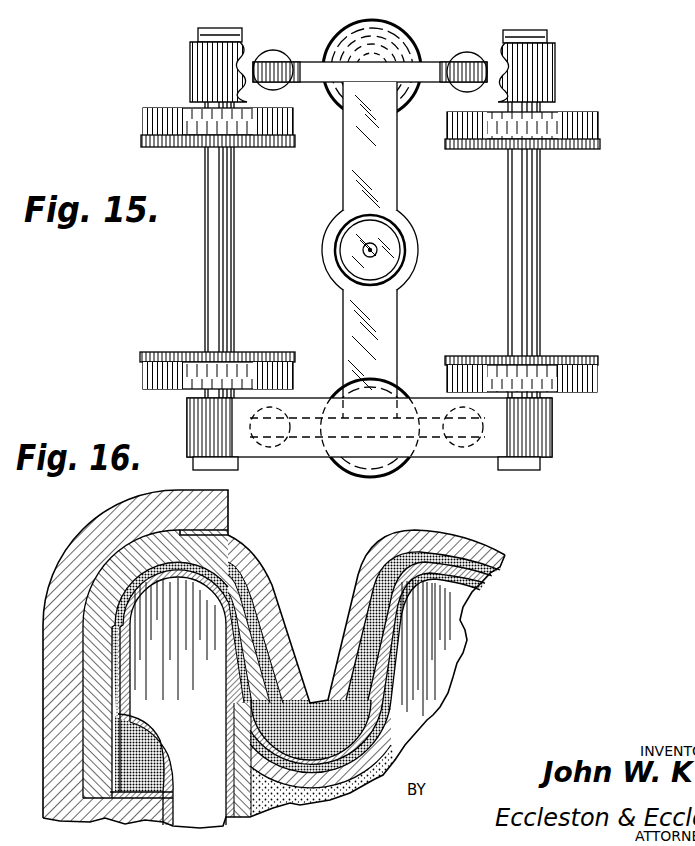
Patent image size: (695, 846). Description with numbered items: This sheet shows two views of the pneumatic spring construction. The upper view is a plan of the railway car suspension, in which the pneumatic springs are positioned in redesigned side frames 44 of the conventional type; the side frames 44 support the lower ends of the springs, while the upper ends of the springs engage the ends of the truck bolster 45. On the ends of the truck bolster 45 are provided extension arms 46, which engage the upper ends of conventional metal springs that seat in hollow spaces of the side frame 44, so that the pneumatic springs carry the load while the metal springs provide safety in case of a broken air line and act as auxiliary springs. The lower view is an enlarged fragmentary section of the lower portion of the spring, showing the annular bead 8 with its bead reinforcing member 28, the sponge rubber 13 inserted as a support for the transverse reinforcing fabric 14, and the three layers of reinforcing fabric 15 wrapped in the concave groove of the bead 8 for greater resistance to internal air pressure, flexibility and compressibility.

In FIG. 15, the extension arms 46 is at (277, 52).
In FIG. 15, the truck bolster 45 is at (394, 175).
In FIG. 15, the side frame 44 is at (437, 448).
In FIG. 16, the bead reinforcing member 28 is at (362, 586).
In FIG. 16, the layers of reinforcing fabric 15 is at (308, 692).
In FIG. 16, the bead 8 is at (236, 712).
In FIG. 16, the transverse reinforcing fabric 14 is at (226, 737).
In FIG. 16, the sponge rubber 13 is at (350, 779).